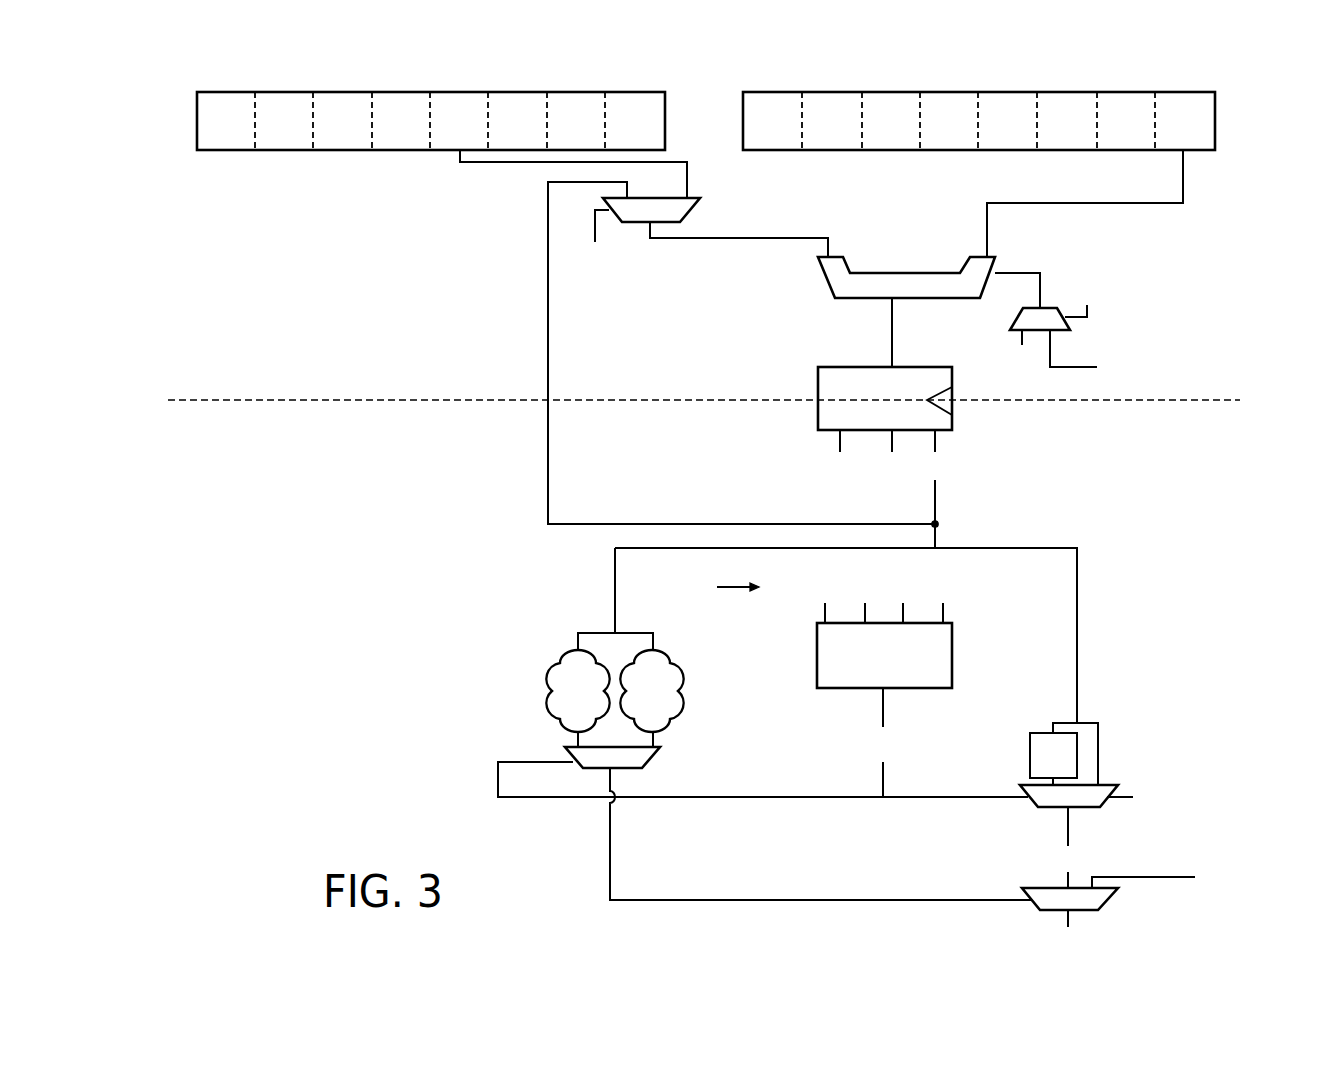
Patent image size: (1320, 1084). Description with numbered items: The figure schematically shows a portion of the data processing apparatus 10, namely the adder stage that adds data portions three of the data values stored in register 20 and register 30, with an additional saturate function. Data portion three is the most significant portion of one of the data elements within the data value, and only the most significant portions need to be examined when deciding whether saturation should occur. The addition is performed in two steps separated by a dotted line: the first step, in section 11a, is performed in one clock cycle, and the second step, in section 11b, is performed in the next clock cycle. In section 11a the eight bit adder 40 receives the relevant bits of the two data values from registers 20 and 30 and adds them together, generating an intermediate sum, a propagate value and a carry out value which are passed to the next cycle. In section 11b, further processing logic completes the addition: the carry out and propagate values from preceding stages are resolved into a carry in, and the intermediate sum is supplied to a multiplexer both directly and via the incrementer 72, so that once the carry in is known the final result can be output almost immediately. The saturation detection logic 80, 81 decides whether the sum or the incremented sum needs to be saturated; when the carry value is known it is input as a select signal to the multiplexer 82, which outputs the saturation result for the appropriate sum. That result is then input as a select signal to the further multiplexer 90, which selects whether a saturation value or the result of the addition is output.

The data processing apparatus 10 is at (150, 711).
The first step section 11a is at (313, 319).
The second step section 11b is at (313, 624).
The register 20 is at (665, 105).
The register 30 is at (1215, 105).
The incrementer 72 is at (697, 213).
The 8 bit adder 40 is at (852, 268).
The saturation detection logic 80 is at (544, 690).
The saturation detection logic 81 is at (687, 690).
The multiplexer 82 is at (648, 762).
The further multiplexer 90 is at (1112, 903).